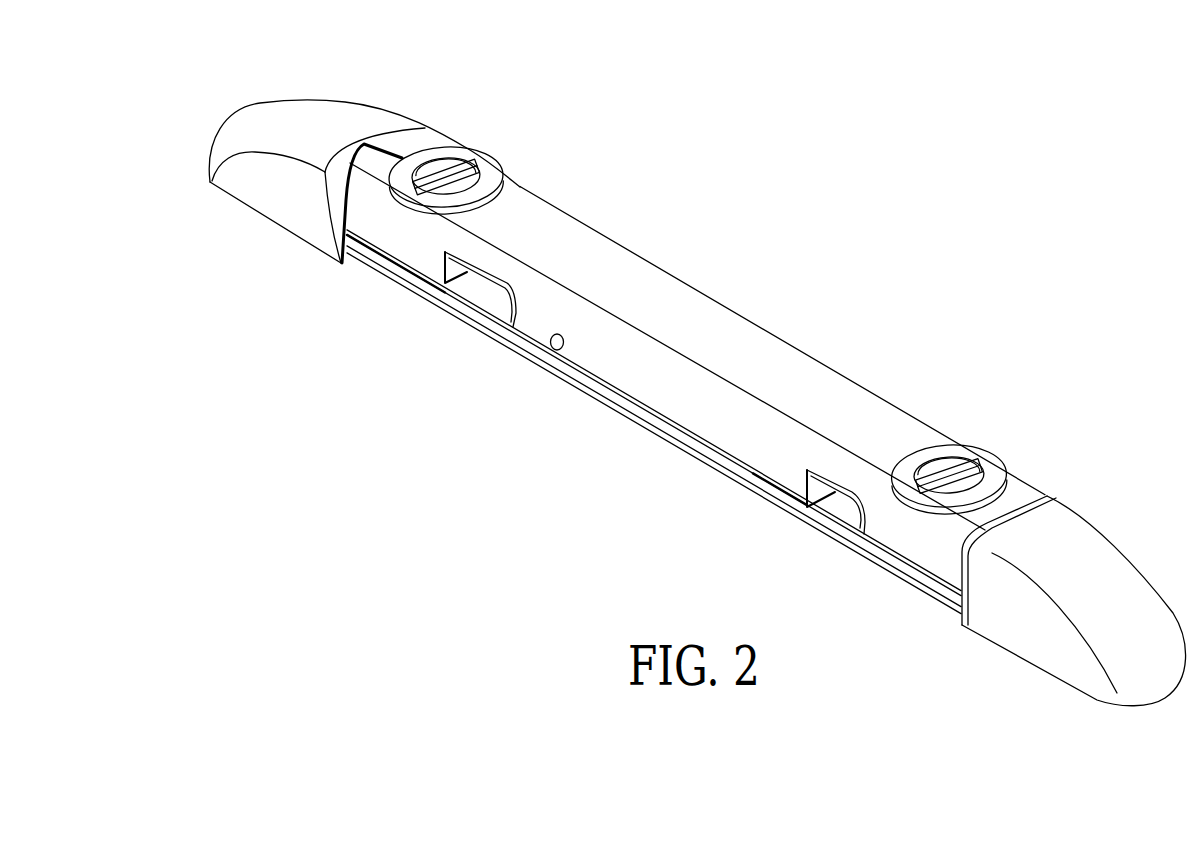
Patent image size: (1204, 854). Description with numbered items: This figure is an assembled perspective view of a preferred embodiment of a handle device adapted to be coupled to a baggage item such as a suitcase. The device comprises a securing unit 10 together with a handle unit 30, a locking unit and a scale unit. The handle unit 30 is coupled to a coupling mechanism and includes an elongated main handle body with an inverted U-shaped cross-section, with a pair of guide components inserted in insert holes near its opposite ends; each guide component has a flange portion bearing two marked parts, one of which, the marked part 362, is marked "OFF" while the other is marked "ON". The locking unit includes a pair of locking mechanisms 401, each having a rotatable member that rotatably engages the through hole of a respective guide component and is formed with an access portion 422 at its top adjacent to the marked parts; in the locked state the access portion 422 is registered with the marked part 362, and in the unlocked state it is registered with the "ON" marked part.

The securing unit 10 is at (1150, 572).
The handle unit 30 is at (734, 307).
The locking mechanism 401 is at (452, 172).
The marked part 362 is at (982, 449).
The access portion 422 is at (990, 467).